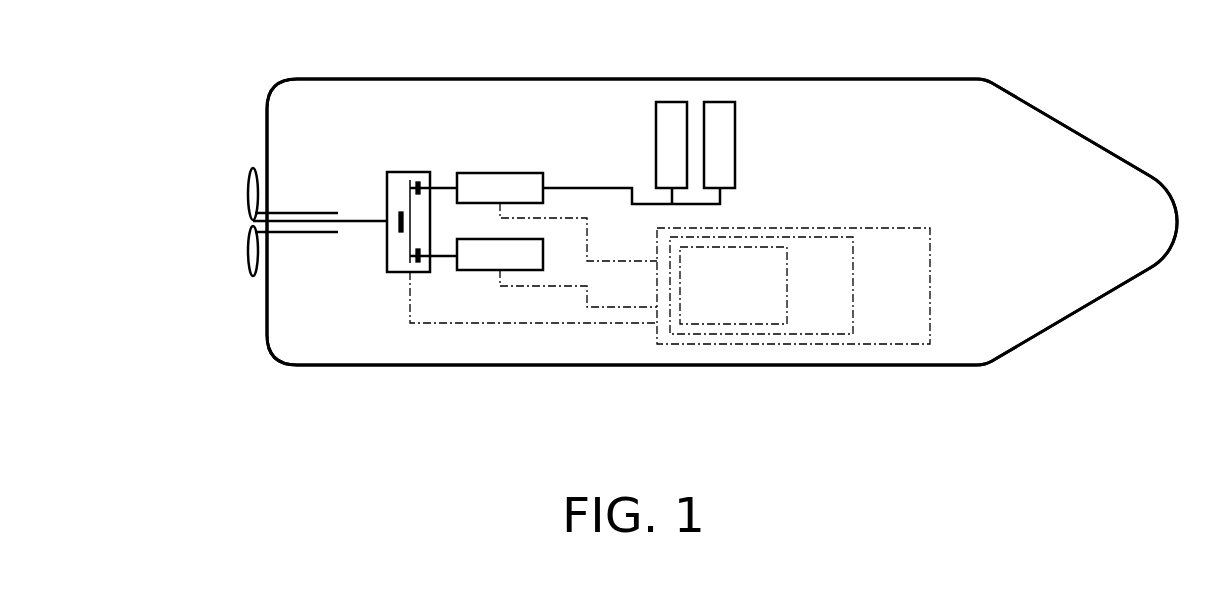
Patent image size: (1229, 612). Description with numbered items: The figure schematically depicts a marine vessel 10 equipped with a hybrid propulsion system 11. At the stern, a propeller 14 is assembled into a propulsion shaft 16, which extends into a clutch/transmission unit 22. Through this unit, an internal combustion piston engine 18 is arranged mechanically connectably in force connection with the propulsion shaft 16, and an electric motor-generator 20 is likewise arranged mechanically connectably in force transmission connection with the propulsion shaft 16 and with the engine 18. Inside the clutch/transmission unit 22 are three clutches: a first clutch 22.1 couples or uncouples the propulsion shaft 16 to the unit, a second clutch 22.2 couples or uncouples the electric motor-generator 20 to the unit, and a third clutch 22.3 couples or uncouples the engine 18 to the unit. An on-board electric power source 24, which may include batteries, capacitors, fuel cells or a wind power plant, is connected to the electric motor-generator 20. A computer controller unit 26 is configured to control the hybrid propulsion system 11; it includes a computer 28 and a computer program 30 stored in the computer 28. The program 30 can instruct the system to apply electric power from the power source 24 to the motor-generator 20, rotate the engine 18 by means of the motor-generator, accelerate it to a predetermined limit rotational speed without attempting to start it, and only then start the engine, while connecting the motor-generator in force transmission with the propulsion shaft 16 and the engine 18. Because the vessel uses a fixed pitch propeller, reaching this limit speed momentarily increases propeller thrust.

The marine vessel 10 is at (723, 60).
The hybrid propulsion system 11 is at (410, 98).
The propeller 14 is at (257, 190).
The propulsion shaft 16 is at (385, 219).
The internal combustion piston engine 18 is at (516, 267).
The electric motor-generator 20 is at (516, 200).
The clutch/transmission unit 22 is at (415, 222).
The first clutch 22.1 is at (397, 213).
The second clutch 22.2 is at (422, 187).
The third clutch 22.3 is at (422, 259).
The on-board electric power source 24 is at (659, 98).
The computer controller unit 26 is at (904, 276).
The computer 28 is at (837, 301).
The computer program 30 is at (749, 301).